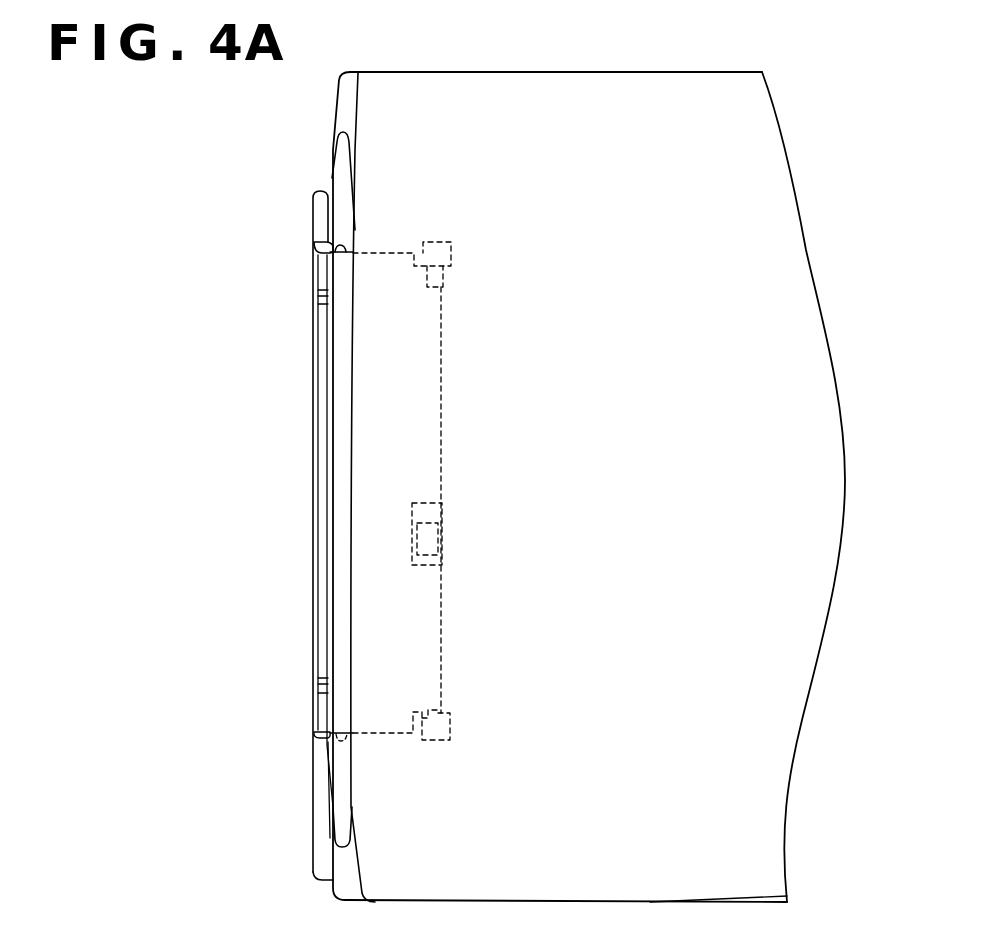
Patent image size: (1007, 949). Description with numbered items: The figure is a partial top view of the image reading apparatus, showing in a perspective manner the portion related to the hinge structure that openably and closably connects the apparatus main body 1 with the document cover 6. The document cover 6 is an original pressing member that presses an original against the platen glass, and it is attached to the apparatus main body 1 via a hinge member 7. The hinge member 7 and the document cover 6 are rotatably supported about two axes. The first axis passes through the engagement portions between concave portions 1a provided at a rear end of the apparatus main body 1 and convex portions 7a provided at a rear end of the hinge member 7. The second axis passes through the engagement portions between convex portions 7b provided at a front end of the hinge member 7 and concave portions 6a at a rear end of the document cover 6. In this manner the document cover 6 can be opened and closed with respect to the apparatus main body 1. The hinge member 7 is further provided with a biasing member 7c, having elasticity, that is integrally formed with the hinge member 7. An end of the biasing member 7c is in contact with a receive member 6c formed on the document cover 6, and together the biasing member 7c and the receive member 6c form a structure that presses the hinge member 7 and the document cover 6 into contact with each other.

The document cover 6 is at (617, 97).
The apparatus main body 1 is at (337, 146).
The hinge member 7 is at (365, 632).
The concave portions 1a is at (316, 243).
The convex portions 7a is at (301, 230).
The concave portions 6a is at (452, 256).
The convex portions 7b is at (513, 478).
The receive member 6c is at (436, 545).
The biasing member 7c is at (418, 517).